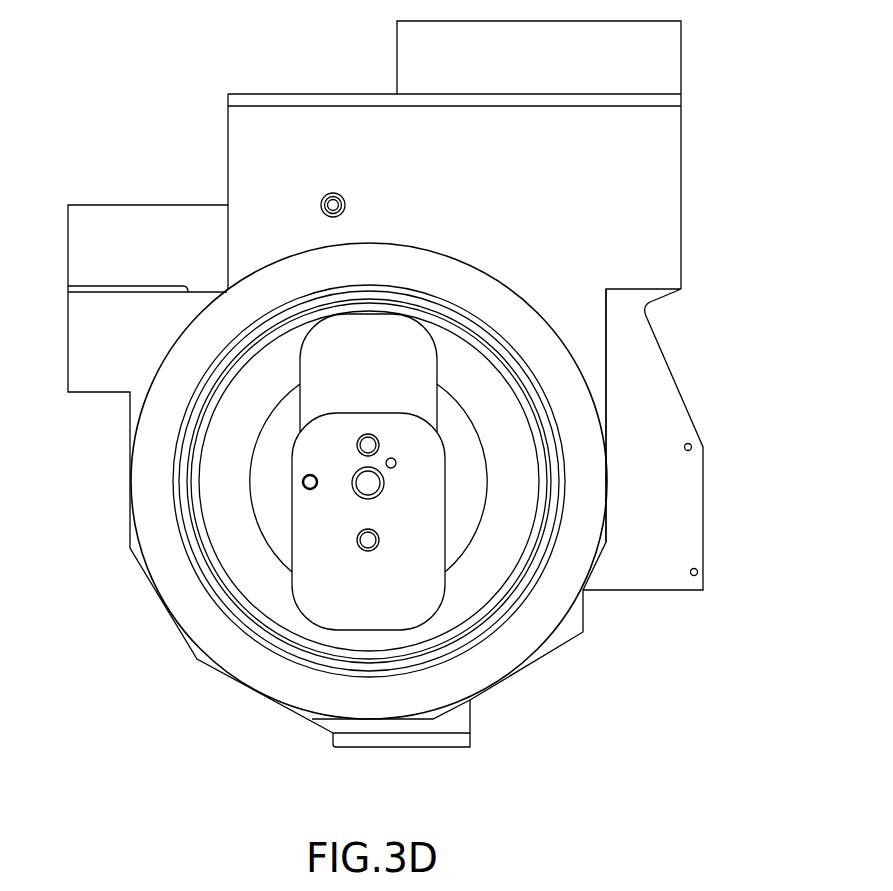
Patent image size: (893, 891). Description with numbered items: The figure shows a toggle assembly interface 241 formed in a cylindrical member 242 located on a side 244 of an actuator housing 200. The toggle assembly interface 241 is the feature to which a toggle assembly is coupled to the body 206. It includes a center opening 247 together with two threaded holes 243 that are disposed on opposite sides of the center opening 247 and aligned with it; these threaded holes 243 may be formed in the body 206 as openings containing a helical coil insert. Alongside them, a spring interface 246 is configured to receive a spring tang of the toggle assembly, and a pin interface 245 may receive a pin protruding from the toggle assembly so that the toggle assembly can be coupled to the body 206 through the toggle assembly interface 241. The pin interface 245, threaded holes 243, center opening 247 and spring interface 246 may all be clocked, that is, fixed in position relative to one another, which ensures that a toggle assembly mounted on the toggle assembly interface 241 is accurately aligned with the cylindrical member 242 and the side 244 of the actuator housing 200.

The actuator housing 200 is at (152, 105).
The side 244 is at (652, 199).
The body 206 is at (597, 327).
The toggle assembly interface 241 is at (305, 583).
The cylindrical member 242 is at (470, 617).
The threaded holes 243 is at (378, 534).
The pin interface 245 is at (311, 476).
The spring interface 246 is at (395, 467).
The center opening 247 is at (362, 486).